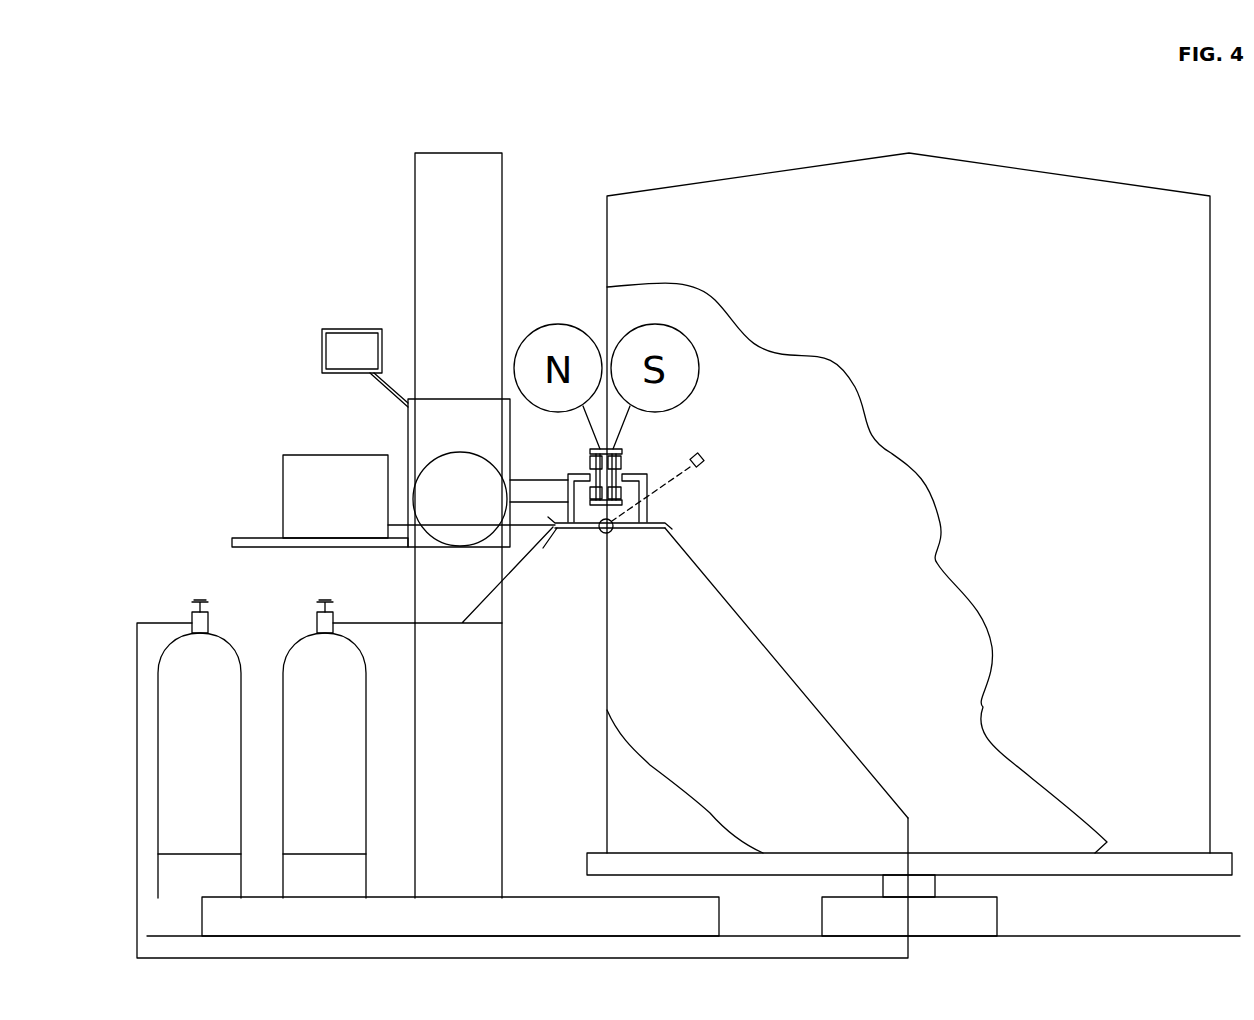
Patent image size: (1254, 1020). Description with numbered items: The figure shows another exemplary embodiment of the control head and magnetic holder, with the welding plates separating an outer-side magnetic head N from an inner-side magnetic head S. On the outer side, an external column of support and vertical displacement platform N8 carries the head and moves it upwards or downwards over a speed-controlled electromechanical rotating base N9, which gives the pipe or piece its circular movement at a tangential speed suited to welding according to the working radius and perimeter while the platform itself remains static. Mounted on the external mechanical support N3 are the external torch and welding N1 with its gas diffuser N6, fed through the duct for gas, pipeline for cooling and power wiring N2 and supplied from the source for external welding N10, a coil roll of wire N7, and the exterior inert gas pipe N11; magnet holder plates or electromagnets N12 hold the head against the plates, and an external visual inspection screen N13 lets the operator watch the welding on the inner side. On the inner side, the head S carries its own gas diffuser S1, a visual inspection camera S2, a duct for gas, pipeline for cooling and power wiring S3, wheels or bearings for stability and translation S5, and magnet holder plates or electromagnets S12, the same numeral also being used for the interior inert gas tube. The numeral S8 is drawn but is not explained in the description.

The external torch and welding N1 is at (572, 530).
The duct for gas, pipeline for cooling and power wiring N2 is at (524, 556).
The external mechanical support N3 is at (554, 489).
The gas diffuser N6 is at (602, 533).
The coil roll (wire) N7 is at (456, 455).
The external vertical displacement platform N8 is at (445, 165).
The rotating base N9 is at (587, 864).
The source for external welding N10 is at (288, 483).
The exterior inert gas pipe N11 is at (292, 675).
The magnet holder plates or electromagnets N12 is at (596, 472).
The external visual inspection screen for side (S) welding N13 is at (336, 330).
The gas diffuser S1 is at (627, 528).
The visual inspection camera S2 is at (702, 468).
The duct for gas, pipeline for cooling and power wiring S3 is at (668, 525).
The wheels or bearings for stability and translation S5 is at (617, 451).
The gas cylinder S8 is at (190, 668).
The magnet holder plates or electromagnets S12 is at (618, 473).